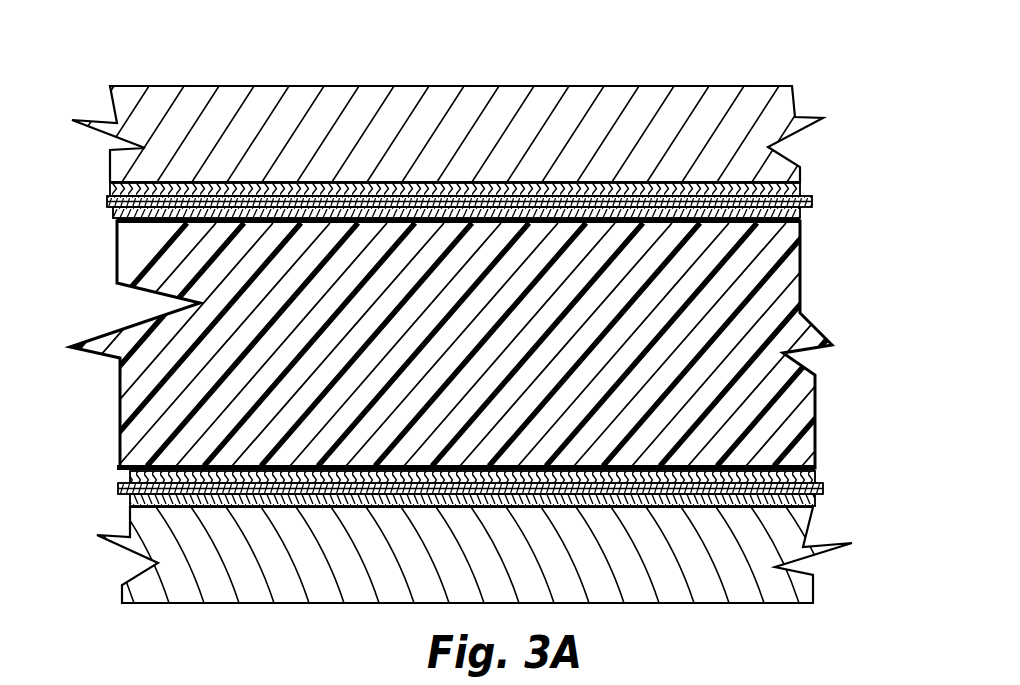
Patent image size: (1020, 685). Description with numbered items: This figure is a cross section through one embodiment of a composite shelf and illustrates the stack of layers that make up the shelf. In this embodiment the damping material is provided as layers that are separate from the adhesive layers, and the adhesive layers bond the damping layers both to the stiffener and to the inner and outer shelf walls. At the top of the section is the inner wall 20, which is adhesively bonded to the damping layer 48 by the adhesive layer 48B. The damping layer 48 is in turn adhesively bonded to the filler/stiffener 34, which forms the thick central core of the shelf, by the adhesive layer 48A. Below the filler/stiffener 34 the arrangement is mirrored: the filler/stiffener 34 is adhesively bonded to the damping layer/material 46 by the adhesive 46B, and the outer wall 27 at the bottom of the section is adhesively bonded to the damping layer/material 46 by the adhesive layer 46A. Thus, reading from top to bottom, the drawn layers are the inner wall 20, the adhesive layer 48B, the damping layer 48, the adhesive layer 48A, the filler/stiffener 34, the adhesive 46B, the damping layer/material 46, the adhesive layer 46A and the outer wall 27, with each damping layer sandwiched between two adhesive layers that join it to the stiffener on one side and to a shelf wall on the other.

The inner wall 20 is at (793, 90).
The adhesive layer 48B is at (800, 187).
The damping layer 48 is at (812, 201).
The adhesive layer 48A is at (800, 220).
The filler/stiffener 34 is at (803, 365).
The adhesive 46B is at (828, 462).
The damping layer/material 46 is at (823, 489).
The adhesive layer 46A is at (815, 508).
The outer wall 27 is at (813, 570).